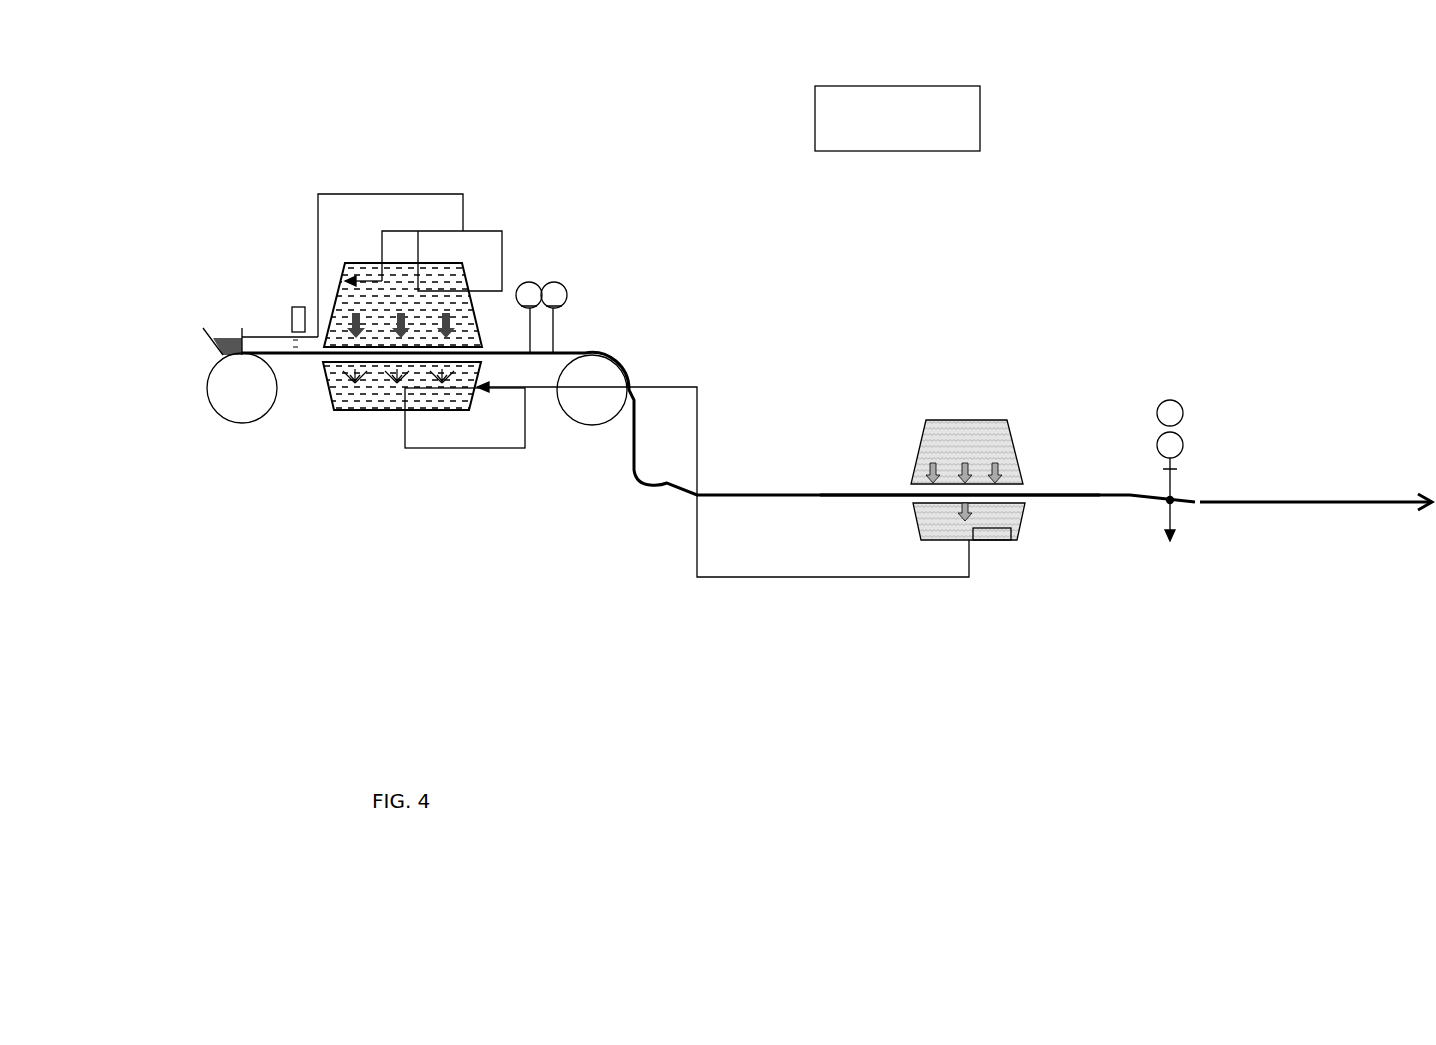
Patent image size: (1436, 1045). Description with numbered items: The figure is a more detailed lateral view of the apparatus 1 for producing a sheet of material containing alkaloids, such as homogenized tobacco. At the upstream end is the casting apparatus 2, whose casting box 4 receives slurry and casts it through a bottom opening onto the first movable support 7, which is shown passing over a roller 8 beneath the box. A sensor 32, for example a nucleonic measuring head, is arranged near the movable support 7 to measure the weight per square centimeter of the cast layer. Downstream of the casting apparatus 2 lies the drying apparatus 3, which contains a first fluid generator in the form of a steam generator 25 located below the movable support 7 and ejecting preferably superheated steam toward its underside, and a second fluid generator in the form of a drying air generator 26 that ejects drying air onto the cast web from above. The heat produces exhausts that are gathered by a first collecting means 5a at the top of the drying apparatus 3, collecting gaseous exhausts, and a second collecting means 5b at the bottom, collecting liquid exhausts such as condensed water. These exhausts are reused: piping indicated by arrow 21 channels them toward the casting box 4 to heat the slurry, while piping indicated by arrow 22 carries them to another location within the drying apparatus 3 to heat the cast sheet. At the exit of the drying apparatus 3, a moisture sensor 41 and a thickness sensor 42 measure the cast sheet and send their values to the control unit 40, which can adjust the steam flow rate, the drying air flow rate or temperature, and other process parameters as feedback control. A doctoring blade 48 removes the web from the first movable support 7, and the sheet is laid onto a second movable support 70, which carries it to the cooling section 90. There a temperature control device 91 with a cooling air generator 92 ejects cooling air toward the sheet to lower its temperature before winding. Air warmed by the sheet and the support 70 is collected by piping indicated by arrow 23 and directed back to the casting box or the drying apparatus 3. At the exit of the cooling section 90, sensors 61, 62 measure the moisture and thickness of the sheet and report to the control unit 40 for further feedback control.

The apparatus 1 is at (902, 785).
The casting apparatus 2 is at (203, 283).
The drying apparatus 3 is at (403, 200).
The casting box 4 is at (222, 336).
The first collecting means 5a is at (449, 233).
The second collecting means 5b is at (437, 449).
The first movable support 7 is at (525, 353).
The feed roller 8 is at (205, 374).
The arrow 21 is at (317, 193).
The arrow 22 is at (382, 243).
The arrow 23 is at (755, 580).
The steam generator 25 is at (353, 375).
The drying air generator 26 is at (448, 327).
The sensor 32 is at (292, 325).
The control unit 40 is at (955, 125).
The moisture sensor 41 is at (567, 295).
The thickness sensor 42 is at (527, 290).
The doctoring blade 48 is at (633, 385).
The sensor 61 is at (1170, 415).
The sensor 62 is at (1172, 453).
The second movable support 70 is at (867, 500).
The cooling section 90 is at (1002, 433).
The temperature control device 91 is at (1005, 537).
The cooling air generator 92 is at (928, 467).